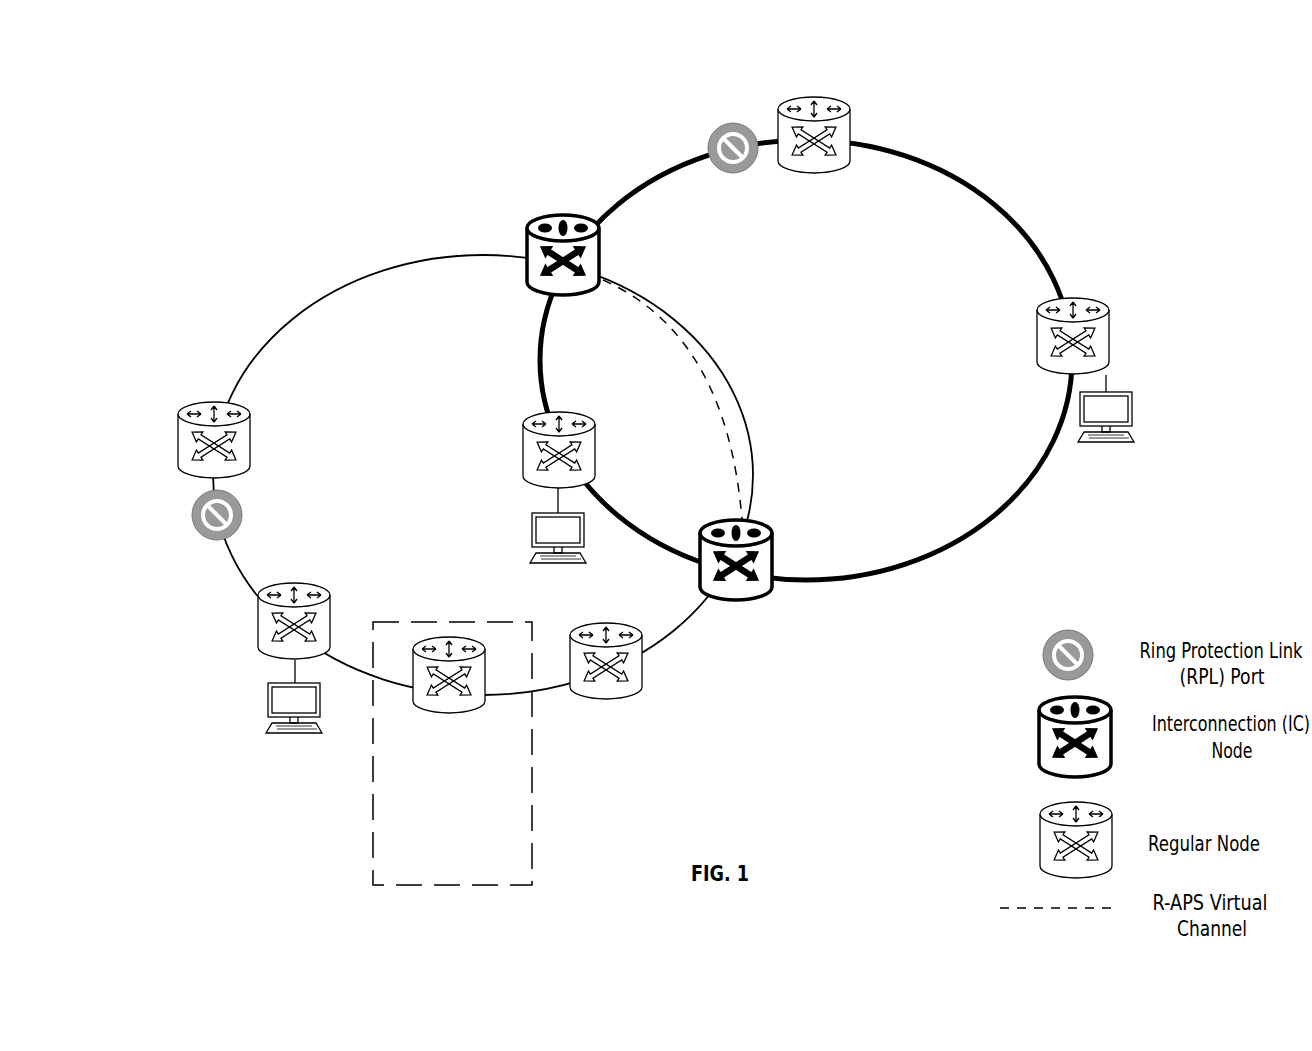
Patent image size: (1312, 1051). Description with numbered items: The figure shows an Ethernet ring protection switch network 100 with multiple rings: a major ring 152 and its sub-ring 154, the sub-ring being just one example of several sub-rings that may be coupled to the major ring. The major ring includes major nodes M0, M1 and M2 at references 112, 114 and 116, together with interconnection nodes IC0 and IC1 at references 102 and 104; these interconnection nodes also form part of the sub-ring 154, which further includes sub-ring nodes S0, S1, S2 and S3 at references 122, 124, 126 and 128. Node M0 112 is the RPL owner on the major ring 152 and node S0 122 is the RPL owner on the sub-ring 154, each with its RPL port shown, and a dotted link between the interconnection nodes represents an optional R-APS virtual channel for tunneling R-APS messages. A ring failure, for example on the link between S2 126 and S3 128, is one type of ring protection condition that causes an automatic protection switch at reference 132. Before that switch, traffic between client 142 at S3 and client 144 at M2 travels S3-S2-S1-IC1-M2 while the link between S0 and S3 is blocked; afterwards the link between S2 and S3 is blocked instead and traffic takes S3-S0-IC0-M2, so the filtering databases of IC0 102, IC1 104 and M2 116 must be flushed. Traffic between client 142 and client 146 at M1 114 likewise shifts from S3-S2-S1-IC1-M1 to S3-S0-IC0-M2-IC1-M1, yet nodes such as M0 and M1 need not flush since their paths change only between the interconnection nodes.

The network 100 is at (644, 450).
The interconnection node IC0 102 is at (527, 181).
The interconnection node IC1 104 is at (755, 680).
The major ring node M0 112 is at (797, 63).
The major ring node M1 114 is at (1107, 314).
The major ring node M2 116 is at (495, 412).
The sub-ring node S0 122 is at (90, 436).
The sub-ring node S1 124 is at (583, 775).
The sub-ring node S2 126 is at (432, 766).
The sub-ring node S3 128 is at (173, 686).
The ring protection condition and/or command causing APS 132 is at (522, 874).
The client 142 is at (280, 793).
The client 144 is at (600, 579).
The client 146 is at (1160, 431).
The major ring 152 is at (792, 391).
The sub-ring 154 is at (448, 521).